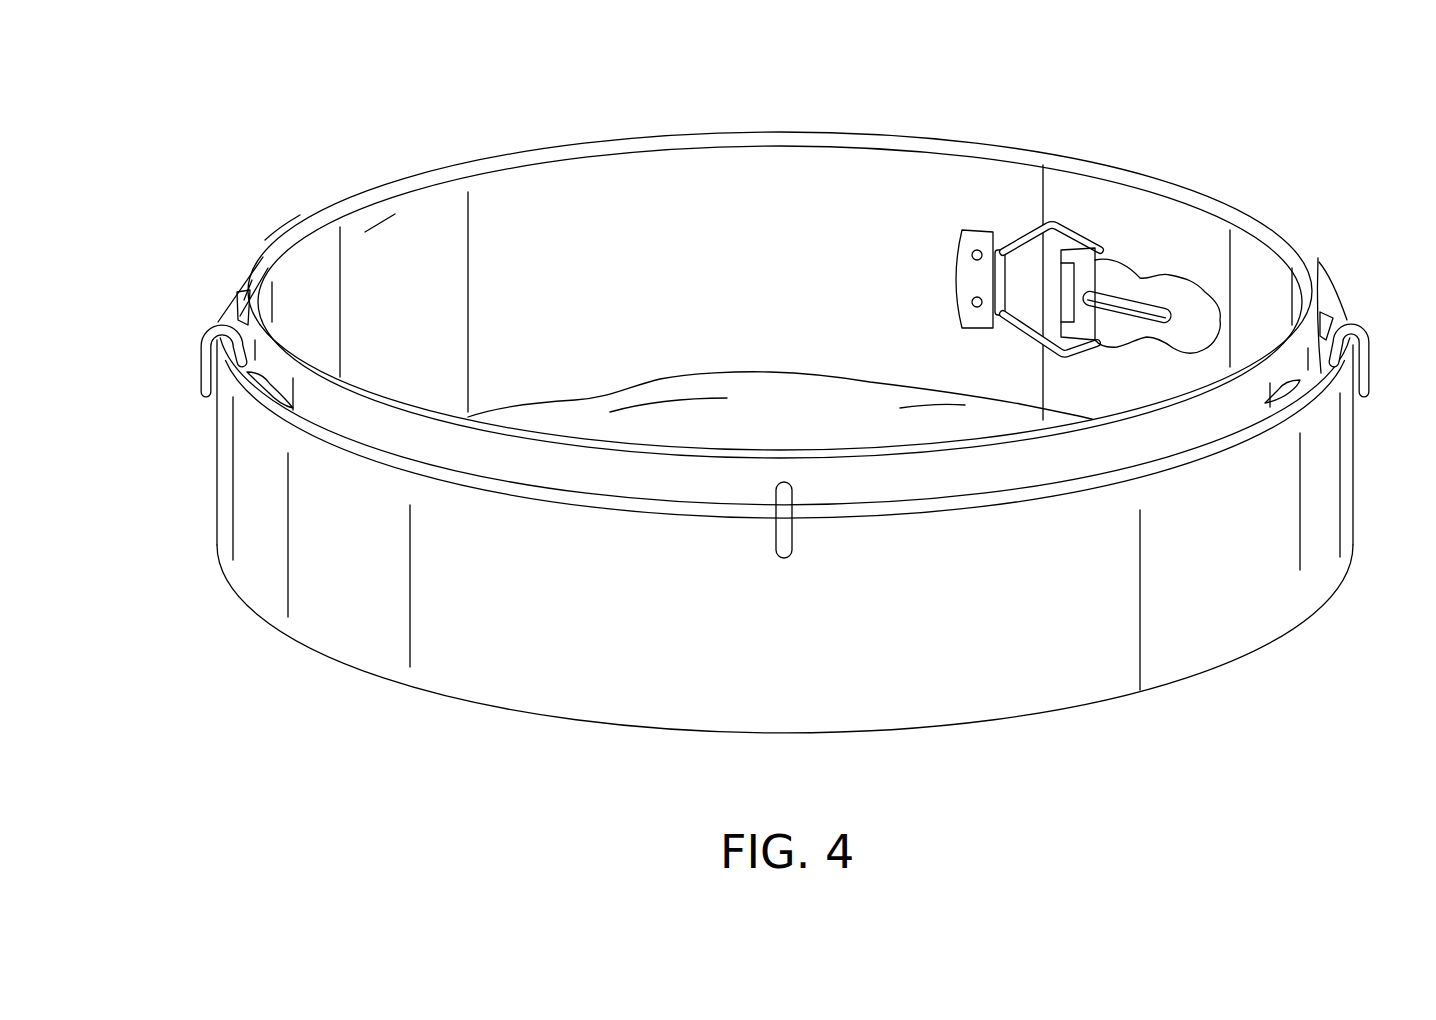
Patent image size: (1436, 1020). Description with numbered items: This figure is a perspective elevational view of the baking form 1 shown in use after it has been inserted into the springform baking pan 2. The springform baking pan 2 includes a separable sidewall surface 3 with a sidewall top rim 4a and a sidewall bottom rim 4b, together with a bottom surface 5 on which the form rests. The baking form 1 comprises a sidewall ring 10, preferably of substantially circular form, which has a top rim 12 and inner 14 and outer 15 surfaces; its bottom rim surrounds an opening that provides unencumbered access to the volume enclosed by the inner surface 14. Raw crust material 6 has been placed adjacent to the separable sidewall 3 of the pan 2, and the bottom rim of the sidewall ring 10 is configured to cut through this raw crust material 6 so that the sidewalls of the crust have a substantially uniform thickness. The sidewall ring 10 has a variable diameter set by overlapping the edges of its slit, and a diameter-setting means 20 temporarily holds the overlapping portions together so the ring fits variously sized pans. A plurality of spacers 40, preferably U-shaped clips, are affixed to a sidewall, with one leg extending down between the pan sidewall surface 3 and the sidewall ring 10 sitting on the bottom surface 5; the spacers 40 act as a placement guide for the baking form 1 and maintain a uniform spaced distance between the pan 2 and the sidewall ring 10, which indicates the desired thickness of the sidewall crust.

The baking form 1 is at (802, 168).
The springform baking pan 2 is at (212, 462).
The separable sidewall surface 3 is at (1355, 470).
The sidewall top rim 4a is at (1317, 270).
The sidewall bottom rim 4b is at (226, 590).
The bottom surface 5 is at (1263, 648).
The raw crust material 6 is at (247, 327).
The sidewall ring 10 is at (230, 313).
The sidewall ring top rim 12 is at (293, 236).
The inner surface 14 is at (381, 222).
The outer surface 15 is at (1288, 370).
The diameter-setting means 20 is at (996, 226).
The spacers 40 is at (214, 323).